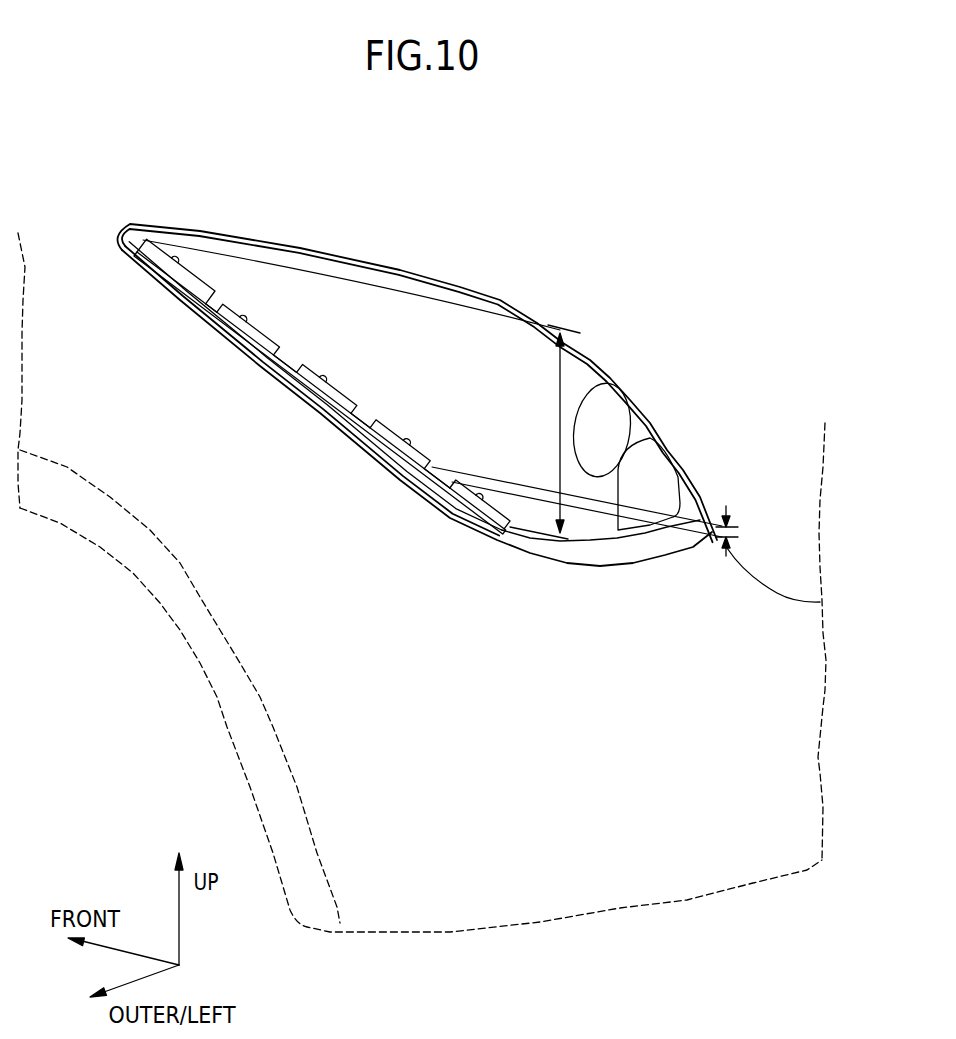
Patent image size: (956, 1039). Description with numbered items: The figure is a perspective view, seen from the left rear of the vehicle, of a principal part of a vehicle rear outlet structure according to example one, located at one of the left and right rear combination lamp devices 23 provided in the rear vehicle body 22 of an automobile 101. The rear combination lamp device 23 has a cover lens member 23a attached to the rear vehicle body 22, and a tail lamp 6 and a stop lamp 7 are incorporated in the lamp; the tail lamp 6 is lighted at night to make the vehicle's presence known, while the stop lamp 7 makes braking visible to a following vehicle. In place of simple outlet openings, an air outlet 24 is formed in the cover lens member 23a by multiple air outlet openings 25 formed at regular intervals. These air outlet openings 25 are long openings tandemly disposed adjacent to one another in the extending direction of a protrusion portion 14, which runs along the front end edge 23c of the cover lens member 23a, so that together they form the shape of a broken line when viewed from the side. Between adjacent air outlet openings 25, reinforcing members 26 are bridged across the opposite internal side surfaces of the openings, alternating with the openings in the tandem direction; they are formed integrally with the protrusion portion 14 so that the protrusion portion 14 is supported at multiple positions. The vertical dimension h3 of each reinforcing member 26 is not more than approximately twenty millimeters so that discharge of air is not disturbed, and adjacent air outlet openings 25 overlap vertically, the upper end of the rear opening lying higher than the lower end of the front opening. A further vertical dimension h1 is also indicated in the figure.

The tail lamp 6 is at (617, 415).
The stop lamp 7 is at (660, 467).
The protrusion portion 14 is at (217, 293).
The rear vehicle body 22 is at (500, 195).
The rear combination lamp device 23 is at (458, 353).
The cover lens member 23a is at (688, 503).
The front end edge 23c is at (300, 405).
The air outlet 24 is at (326, 337).
The air outlet opening 25 is at (183, 253).
The reinforcing member 26 is at (367, 197).
The automobile 101 is at (309, 541).
The height h1 is at (560, 427).
The dimension h3 is at (740, 531).